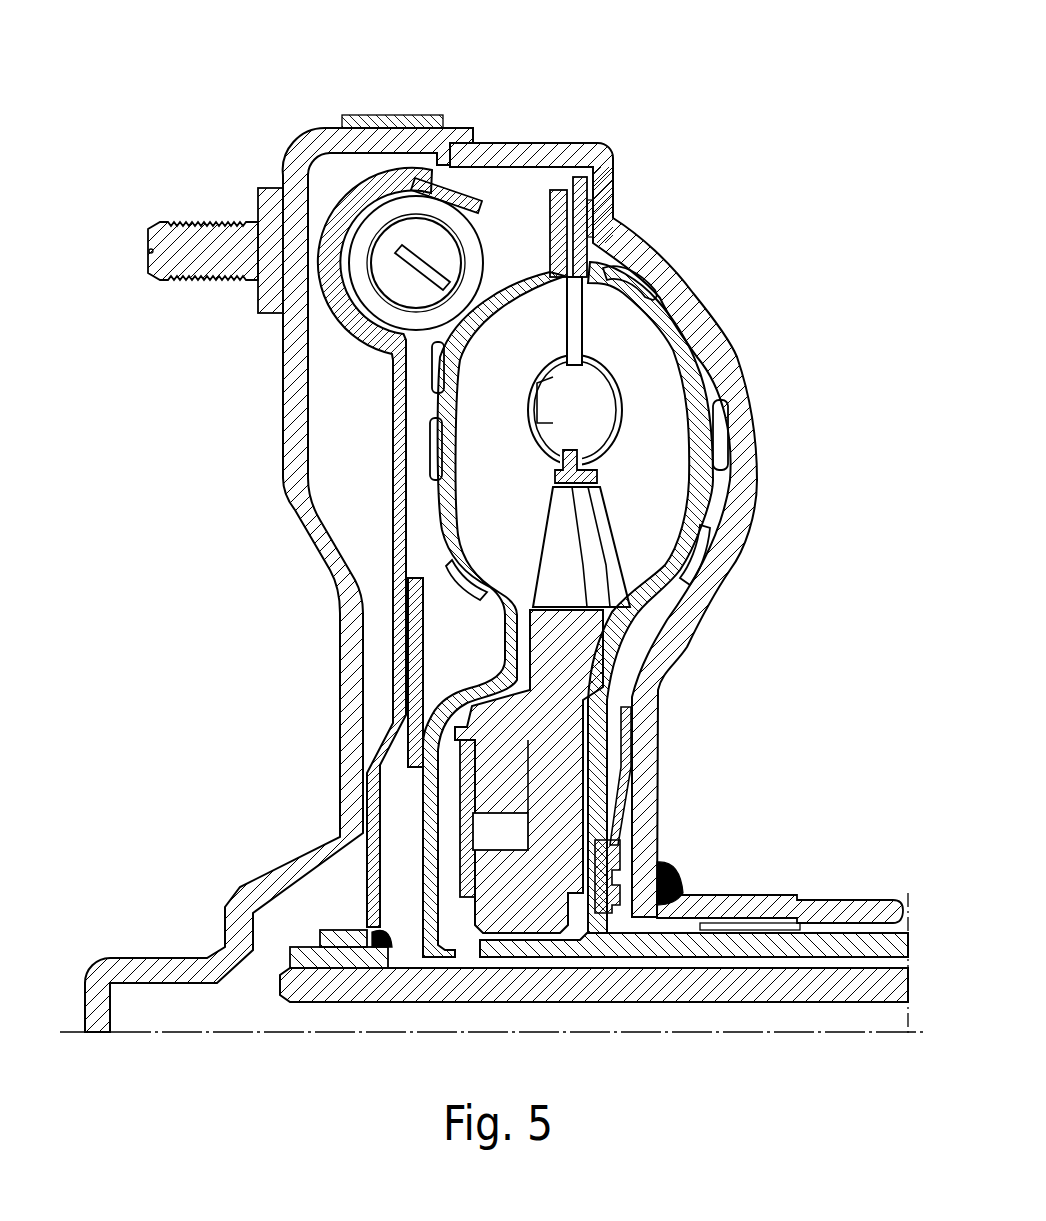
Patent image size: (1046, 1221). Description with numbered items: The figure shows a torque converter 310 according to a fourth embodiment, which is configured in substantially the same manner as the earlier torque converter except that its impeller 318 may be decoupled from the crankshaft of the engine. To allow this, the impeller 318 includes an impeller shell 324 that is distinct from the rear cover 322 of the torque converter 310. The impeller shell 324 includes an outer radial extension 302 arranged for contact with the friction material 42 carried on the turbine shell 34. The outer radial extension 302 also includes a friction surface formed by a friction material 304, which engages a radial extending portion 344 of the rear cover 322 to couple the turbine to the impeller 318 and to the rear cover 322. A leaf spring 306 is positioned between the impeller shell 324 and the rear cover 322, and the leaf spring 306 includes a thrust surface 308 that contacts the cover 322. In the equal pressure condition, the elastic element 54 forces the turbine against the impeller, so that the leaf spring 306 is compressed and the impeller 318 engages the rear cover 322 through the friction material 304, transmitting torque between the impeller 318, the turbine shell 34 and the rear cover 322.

The torque converter 310 is at (697, 80).
The radial extending portion 344 is at (603, 175).
The friction material 304 is at (597, 181).
The outer radial extension 302 is at (597, 213).
The friction material 42 is at (553, 213).
The elastic element 54 is at (417, 745).
The impeller 318 is at (706, 391).
The impeller shell 324 is at (660, 313).
The rear cover 322 is at (740, 487).
The turbine shell 34 is at (453, 443).
The leaf spring 306 is at (633, 800).
The thrust surface 308 is at (632, 735).